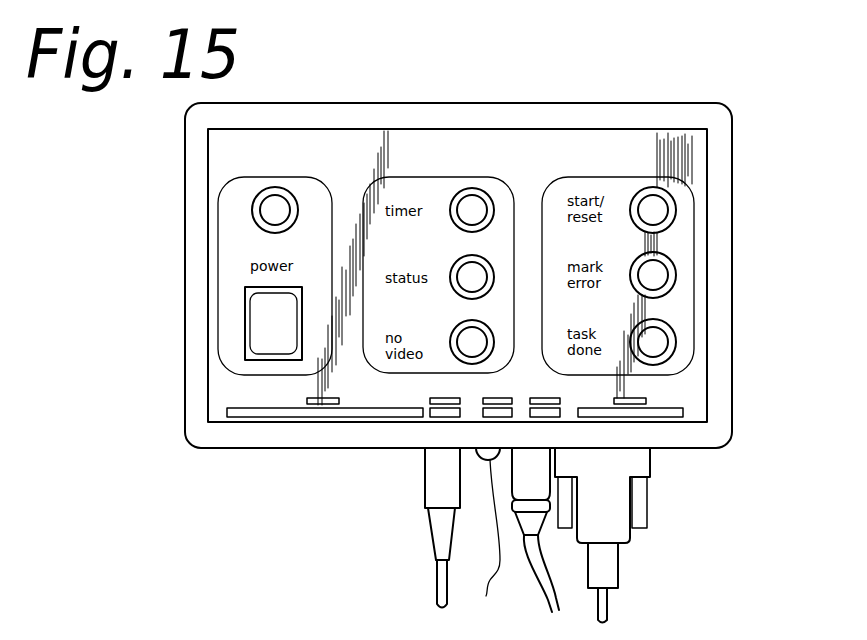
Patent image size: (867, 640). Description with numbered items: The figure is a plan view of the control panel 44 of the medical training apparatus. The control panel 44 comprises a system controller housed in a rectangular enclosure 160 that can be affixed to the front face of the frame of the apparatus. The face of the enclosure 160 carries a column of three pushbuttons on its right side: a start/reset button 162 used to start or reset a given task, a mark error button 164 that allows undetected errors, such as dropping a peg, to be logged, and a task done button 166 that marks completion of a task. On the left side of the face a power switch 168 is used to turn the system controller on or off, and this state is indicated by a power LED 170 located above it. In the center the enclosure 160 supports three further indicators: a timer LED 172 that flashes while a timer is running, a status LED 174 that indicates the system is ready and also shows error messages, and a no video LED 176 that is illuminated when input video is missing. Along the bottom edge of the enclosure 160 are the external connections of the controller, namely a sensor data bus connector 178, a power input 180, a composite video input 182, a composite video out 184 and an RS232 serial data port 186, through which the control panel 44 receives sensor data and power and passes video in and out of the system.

The control panel 44 is at (747, 208).
The rectangular enclosure 160 is at (723, 313).
The start/reset button 162 is at (660, 208).
The mark error button 164 is at (660, 276).
The task done button 166 is at (660, 341).
The power switch 168 is at (252, 333).
The power LED 170 is at (258, 210).
The timer LED 172 is at (492, 213).
The status LED 174 is at (453, 265).
The no video LED 176 is at (470, 347).
The sensor data bus connector 178 is at (268, 450).
The power input 180 is at (425, 452).
The composite video input 182 is at (491, 537).
The composite video out 184 is at (535, 458).
The RS232 serial data port 186 is at (633, 453).